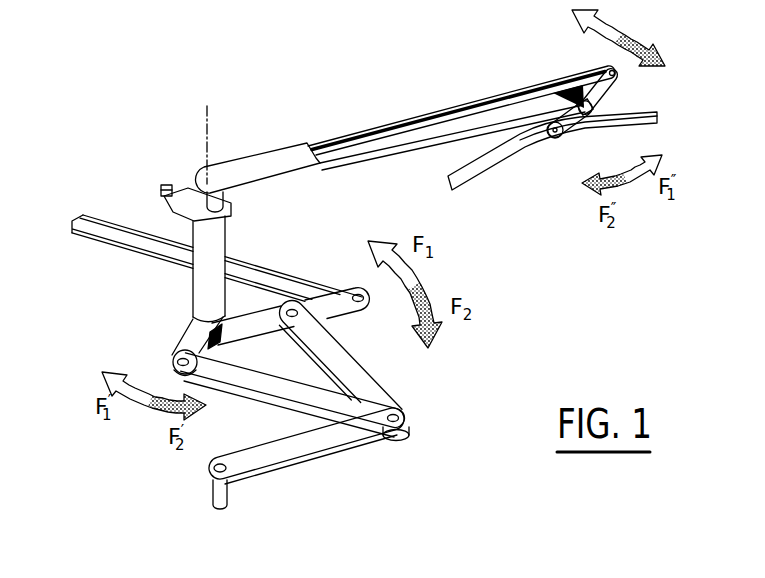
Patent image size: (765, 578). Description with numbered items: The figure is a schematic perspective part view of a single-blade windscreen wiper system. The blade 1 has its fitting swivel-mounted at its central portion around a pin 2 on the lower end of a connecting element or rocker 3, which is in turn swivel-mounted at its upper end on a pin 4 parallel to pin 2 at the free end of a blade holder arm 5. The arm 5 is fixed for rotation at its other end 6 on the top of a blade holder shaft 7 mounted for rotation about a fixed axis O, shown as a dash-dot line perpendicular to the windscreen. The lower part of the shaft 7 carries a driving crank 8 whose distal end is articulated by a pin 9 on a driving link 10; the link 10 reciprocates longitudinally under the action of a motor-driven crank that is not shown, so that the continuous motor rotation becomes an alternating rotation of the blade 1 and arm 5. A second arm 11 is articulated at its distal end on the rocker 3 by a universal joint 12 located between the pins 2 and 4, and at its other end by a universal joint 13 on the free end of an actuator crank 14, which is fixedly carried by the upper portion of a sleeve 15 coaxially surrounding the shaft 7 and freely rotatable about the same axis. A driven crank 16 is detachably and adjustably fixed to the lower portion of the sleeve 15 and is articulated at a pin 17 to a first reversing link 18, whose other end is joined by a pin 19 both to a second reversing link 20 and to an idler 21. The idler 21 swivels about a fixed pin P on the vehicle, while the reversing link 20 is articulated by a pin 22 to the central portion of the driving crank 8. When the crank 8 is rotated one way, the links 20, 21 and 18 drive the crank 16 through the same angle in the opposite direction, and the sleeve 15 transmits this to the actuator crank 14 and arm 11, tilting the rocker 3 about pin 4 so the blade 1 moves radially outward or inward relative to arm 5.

The blade 1 is at (485, 178).
The pin 2 is at (553, 140).
The connecting element or rocker 3 is at (570, 90).
The pin 4 is at (610, 66).
The blade holder arm 5 is at (392, 113).
The other end of blade holder arm 6 is at (216, 170).
The blade holder shaft 7 is at (224, 203).
The driving crank 8 is at (335, 310).
The pin 9 is at (358, 294).
The driving link 10 is at (250, 262).
The second arm 11 is at (364, 160).
The universal joint 12 is at (588, 114).
The universal joint 13 is at (167, 188).
The actuator crank 14 is at (184, 194).
The sleeve 15 is at (196, 284).
The driven crank 16 is at (190, 338).
The pin 17 is at (177, 360).
The first reversing link 18 is at (260, 395).
The pin 19 is at (402, 411).
The second reversing link 20 is at (348, 368).
The idler 21 is at (304, 447).
The pin 22 is at (293, 309).
The fixed axis OO' O is at (197, 145).
The fixed pin P is at (211, 490).